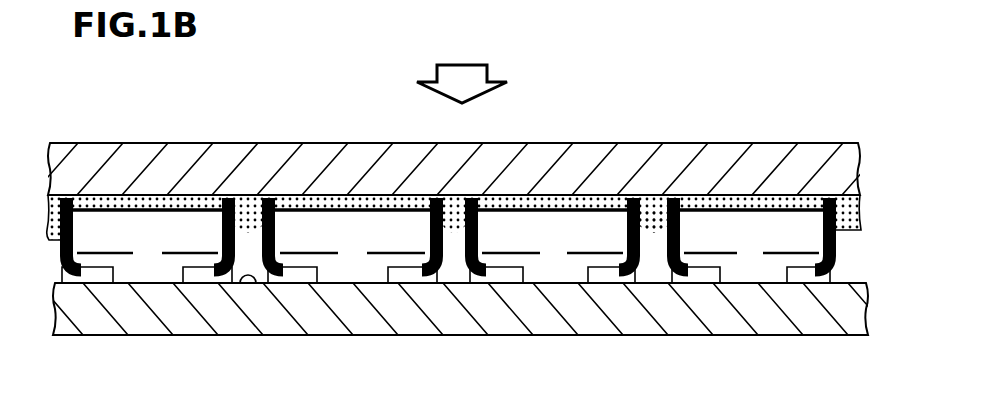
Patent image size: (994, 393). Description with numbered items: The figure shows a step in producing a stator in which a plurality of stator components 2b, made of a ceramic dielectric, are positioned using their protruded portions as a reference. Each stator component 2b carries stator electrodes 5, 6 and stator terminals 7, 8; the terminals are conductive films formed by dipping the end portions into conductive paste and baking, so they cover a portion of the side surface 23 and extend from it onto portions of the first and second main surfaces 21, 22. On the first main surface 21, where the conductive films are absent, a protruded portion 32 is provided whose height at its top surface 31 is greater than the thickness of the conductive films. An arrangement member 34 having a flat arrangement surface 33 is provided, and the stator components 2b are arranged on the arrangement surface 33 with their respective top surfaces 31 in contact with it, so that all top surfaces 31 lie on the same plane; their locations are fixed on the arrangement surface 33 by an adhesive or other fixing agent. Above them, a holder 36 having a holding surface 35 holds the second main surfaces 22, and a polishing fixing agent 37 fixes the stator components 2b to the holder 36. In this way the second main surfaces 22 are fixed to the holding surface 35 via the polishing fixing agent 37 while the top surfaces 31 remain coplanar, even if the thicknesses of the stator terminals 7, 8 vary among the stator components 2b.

The stator component 2b is at (755, 284).
The stator electrode 5 is at (305, 251).
The stator electrode 6 is at (383, 251).
The stator terminal 7 is at (686, 212).
The stator terminal 8 is at (831, 207).
The first main surface 21 is at (515, 269).
The second main surface 22 is at (555, 207).
The side surface 23 is at (461, 262).
The top surface 31 is at (158, 285).
The protruded portion 32 is at (130, 277).
The arrangement surface 33 is at (253, 277).
The arrangement member 34 is at (683, 320).
The holding surface 35 is at (247, 205).
The holder 36 is at (770, 150).
The polishing fixing agent 37 is at (650, 218).